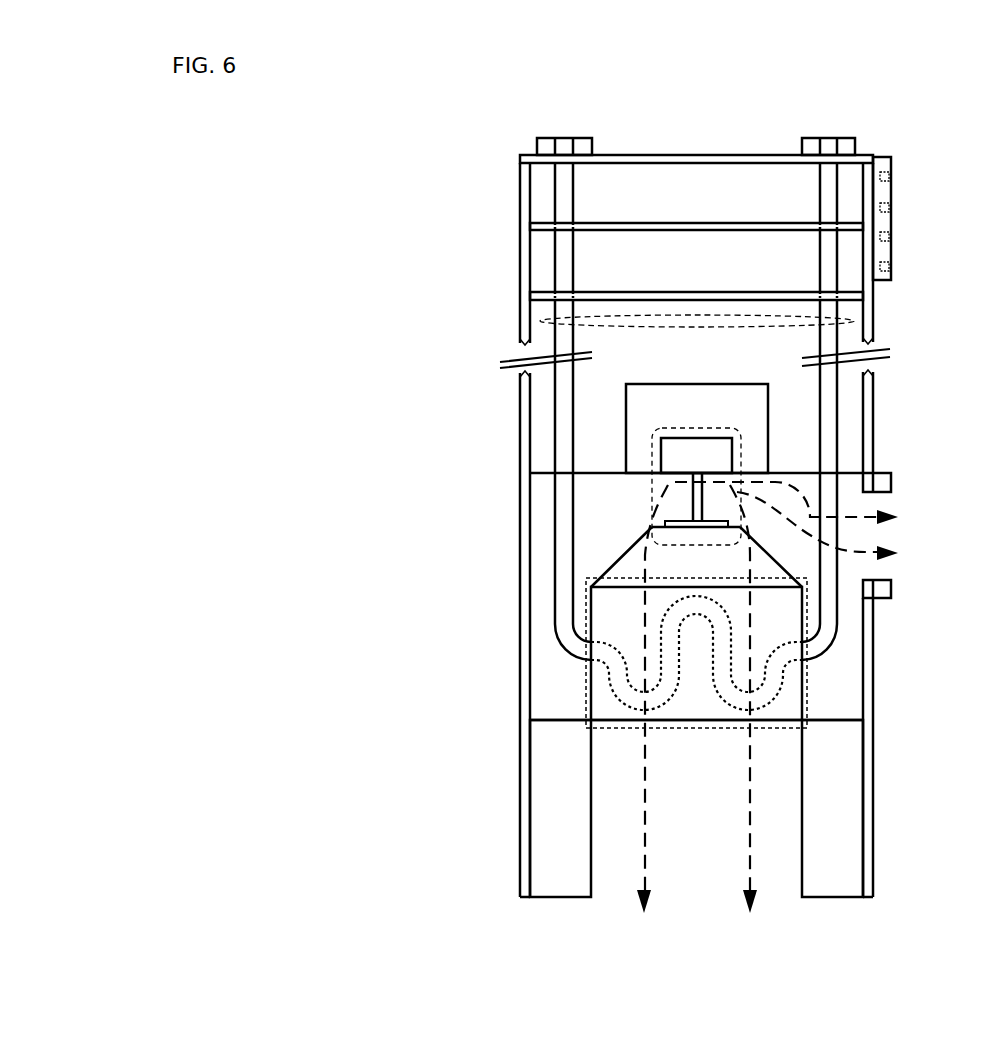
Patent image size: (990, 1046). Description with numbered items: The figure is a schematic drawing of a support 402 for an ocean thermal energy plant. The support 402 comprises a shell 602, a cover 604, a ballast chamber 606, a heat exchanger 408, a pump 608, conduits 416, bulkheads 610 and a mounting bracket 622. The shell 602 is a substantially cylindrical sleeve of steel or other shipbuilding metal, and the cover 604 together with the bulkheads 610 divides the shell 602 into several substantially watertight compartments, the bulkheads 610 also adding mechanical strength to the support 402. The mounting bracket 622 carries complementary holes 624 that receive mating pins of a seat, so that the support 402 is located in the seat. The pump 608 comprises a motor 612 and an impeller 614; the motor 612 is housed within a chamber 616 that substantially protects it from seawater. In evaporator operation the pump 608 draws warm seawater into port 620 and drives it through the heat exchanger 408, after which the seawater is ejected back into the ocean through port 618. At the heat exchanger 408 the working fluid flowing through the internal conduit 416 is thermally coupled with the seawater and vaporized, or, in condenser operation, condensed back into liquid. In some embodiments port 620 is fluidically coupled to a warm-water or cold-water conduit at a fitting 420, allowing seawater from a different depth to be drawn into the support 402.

The support 402 is at (370, 140).
The cover 604 is at (697, 155).
The mounting bracket 622 is at (892, 159).
The bulkheads 610 is at (662, 227).
The holes 624 is at (883, 267).
The conduits 416 is at (538, 322).
The chamber 616 is at (681, 384).
The pump 608 is at (648, 466).
The motor 612 is at (680, 431).
The fitting 420 is at (891, 480).
The impeller 614 is at (677, 523).
The shell 602 is at (518, 507).
The port 620 is at (920, 579).
The heat exchanger 408 is at (588, 710).
The ballast chamber 606 is at (696, 808).
The port 618 is at (795, 909).